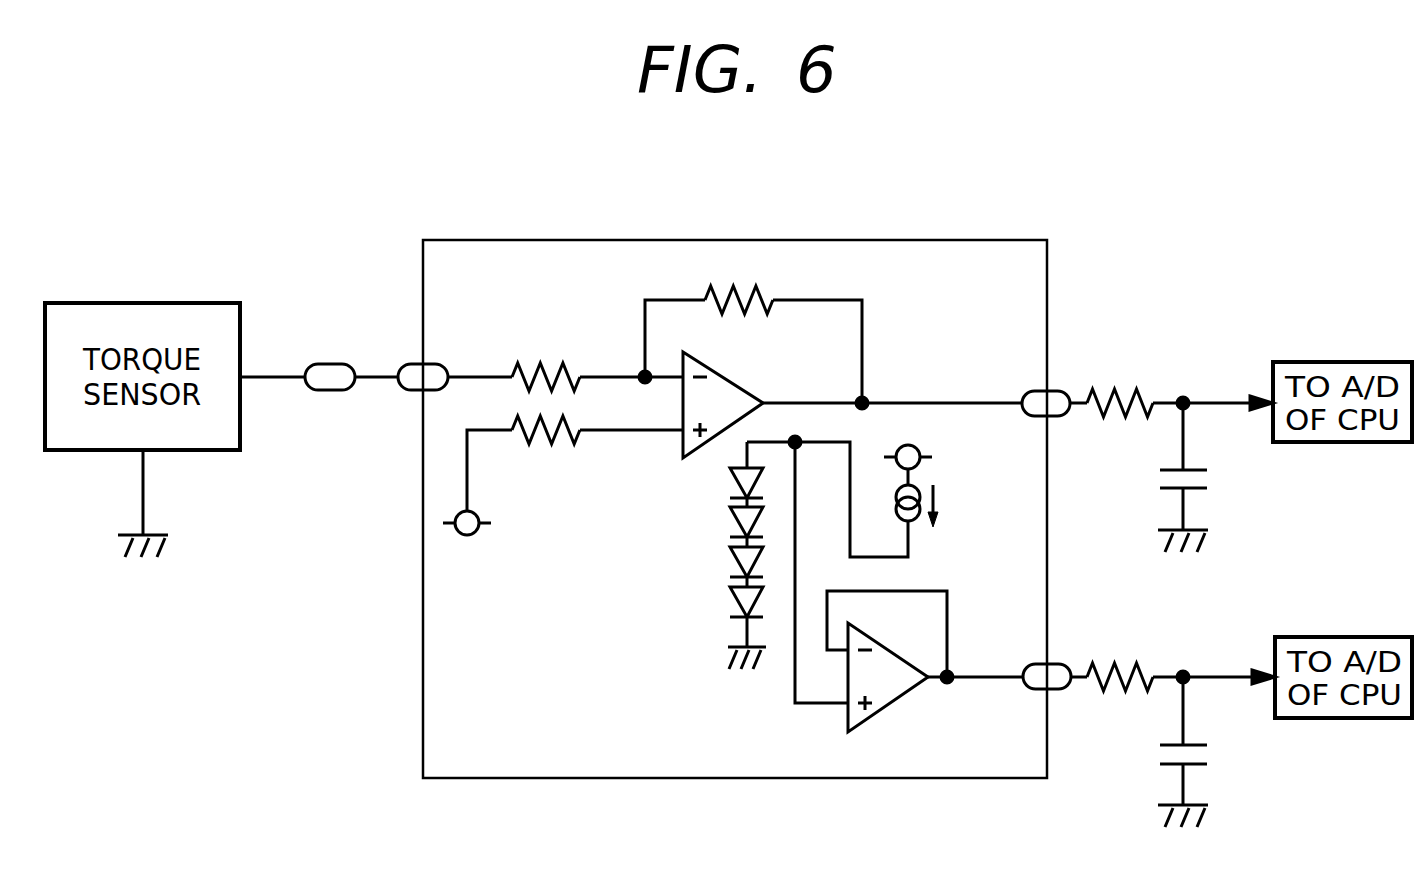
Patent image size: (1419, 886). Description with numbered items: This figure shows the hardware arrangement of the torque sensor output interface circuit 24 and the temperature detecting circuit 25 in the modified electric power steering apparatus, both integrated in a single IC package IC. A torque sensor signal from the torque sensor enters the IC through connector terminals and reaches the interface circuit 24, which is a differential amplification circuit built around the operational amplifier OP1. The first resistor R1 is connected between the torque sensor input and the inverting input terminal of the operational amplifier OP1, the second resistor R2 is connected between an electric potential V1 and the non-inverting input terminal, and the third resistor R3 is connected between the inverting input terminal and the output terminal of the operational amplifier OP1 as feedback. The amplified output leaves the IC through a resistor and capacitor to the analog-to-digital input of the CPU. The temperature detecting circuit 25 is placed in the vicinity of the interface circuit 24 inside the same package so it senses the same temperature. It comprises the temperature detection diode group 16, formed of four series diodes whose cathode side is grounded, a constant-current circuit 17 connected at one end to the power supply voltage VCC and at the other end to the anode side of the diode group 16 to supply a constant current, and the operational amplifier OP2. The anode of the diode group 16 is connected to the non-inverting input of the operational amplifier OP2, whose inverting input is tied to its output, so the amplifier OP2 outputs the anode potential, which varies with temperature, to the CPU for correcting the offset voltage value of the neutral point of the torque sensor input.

The IC package IC is at (728, 240).
The first resistor R1 is at (537, 362).
The second resistor R2 is at (523, 445).
The third resistor R3 is at (765, 300).
The operational amplifier OP1 is at (738, 388).
The operational amplifier OP2 is at (905, 710).
The electric potential V1 is at (467, 542).
The power supply voltage VCC is at (941, 458).
The temperature detection diode group 16 is at (732, 521).
The constant-current circuit 17 is at (937, 499).
The torque sensor output interface circuit 24 is at (882, 311).
The temperature detecting circuit 25 is at (758, 688).